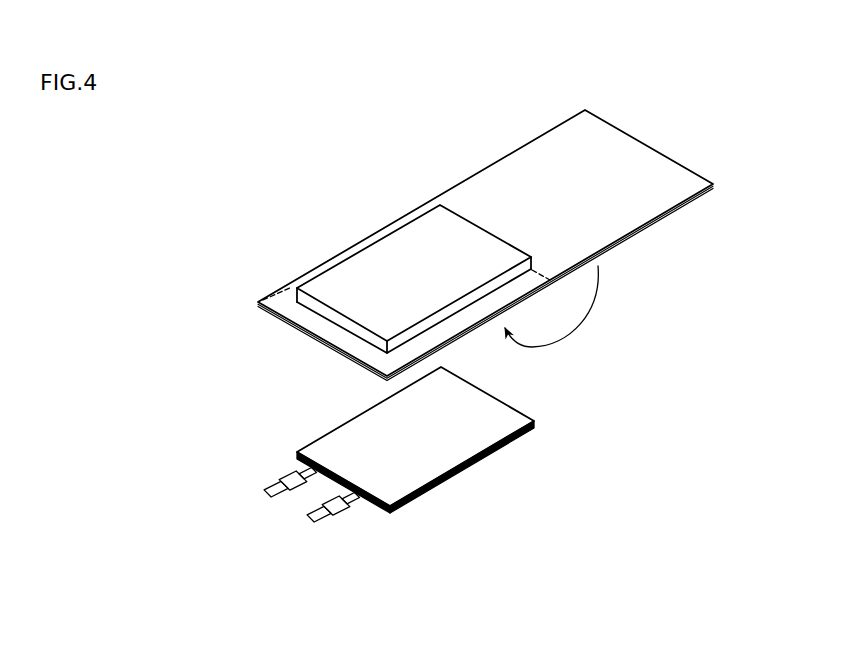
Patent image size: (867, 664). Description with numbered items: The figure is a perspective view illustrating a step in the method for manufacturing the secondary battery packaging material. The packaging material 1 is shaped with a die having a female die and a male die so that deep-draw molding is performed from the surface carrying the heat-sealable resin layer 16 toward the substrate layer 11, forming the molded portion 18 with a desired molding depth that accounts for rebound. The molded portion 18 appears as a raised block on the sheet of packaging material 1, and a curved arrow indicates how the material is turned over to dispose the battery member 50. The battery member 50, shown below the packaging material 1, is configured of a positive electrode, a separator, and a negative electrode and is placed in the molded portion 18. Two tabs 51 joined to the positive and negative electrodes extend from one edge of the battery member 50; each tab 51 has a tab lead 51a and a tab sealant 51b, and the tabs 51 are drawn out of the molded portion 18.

The packaging material 1 is at (492, 203).
The substrate layer 11 is at (290, 286).
The heat-sealable resin layer 16 is at (283, 304).
The molded portion 18 is at (382, 268).
The battery member 50 is at (558, 421).
The tabs 51 is at (286, 515).
The tab lead 51a is at (305, 470).
The tab sealant 51b is at (286, 480).